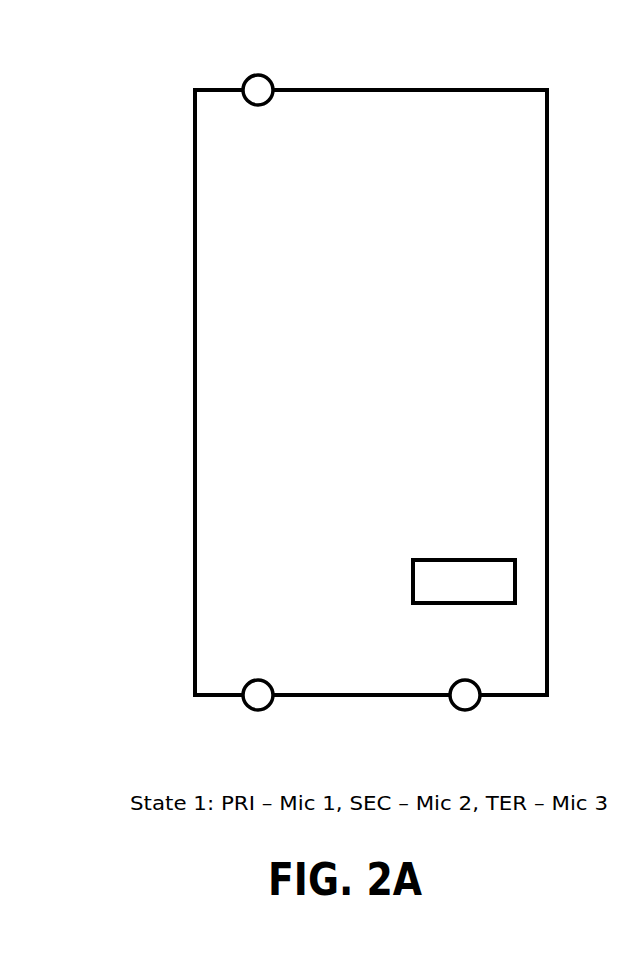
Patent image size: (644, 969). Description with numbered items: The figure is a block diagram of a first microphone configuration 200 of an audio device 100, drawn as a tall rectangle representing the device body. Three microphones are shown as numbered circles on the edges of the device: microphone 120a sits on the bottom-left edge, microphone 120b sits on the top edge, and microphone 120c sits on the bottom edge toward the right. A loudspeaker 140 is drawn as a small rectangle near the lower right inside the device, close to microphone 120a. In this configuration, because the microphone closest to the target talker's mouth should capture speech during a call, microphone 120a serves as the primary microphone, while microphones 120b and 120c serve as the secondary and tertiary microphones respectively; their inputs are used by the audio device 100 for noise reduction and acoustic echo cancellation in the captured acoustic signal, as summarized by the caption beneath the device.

The microphone configuration state 200 is at (618, 60).
The audio device 100 is at (195, 392).
The loudspeaker 140 is at (515, 583).
The microphone 120a is at (250, 707).
The microphone 120b is at (246, 83).
The microphone 120c is at (455, 707).